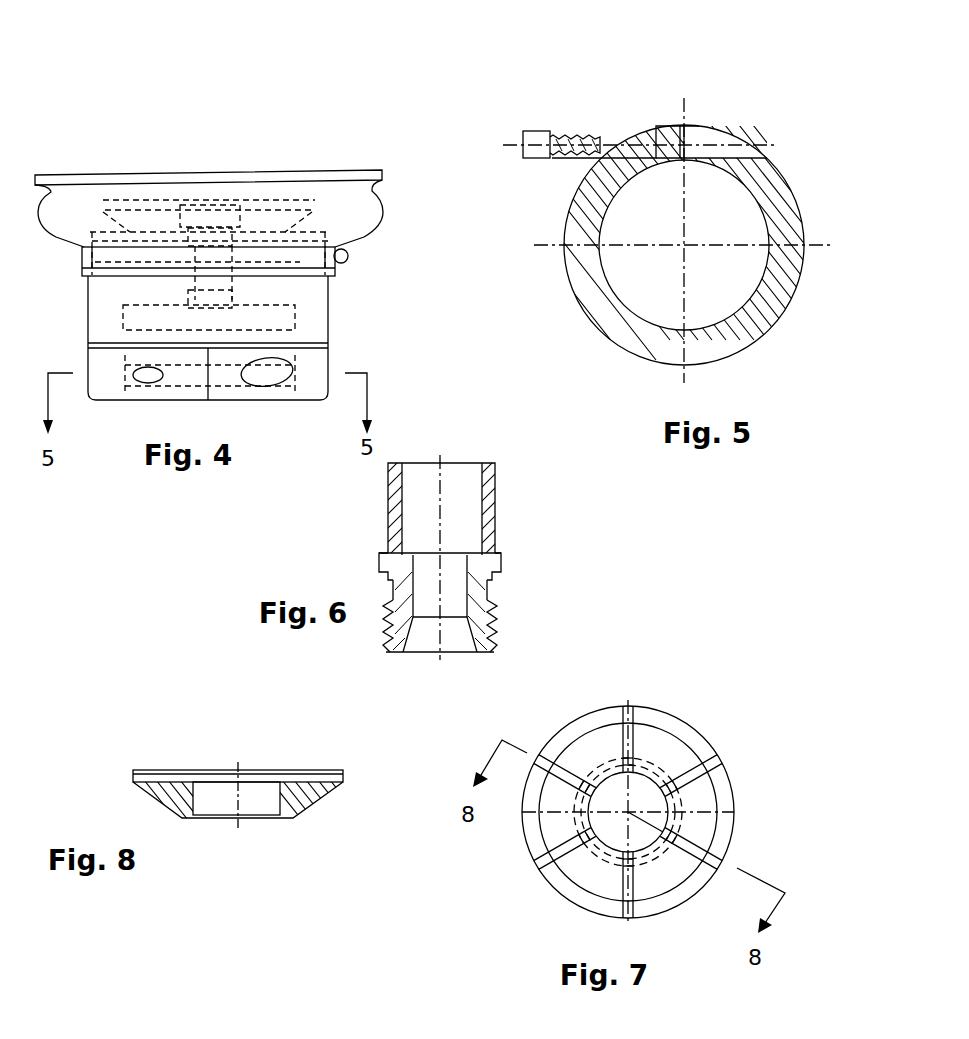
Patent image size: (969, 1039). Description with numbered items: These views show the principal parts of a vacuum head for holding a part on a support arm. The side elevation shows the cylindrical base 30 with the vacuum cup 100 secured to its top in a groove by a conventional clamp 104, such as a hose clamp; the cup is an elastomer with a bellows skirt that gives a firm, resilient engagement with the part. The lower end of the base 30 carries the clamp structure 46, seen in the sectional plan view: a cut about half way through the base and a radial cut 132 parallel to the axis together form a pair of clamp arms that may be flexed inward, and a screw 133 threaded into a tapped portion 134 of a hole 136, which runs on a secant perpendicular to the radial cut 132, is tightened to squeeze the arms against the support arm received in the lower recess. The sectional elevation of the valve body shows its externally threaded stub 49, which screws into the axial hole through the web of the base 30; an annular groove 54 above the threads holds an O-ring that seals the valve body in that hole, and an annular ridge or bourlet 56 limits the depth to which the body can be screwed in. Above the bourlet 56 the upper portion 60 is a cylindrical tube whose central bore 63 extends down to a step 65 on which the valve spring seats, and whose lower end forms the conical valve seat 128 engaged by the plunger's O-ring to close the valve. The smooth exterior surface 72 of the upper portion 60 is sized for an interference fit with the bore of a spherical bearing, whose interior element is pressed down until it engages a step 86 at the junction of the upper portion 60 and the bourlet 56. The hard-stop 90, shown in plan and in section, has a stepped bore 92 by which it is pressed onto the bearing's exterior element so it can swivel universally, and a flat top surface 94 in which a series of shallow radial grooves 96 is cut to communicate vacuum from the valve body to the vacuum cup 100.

In FIG. 4, the vacuum cup 100 is at (380, 199).
In FIG. 4, the clamp 104 is at (348, 258).
In FIG. 5, the cylindrical base 30 is at (796, 308).
In FIG. 5, the clamp structure 46 is at (657, 80).
In FIG. 5, the radial cut 132 is at (684, 144).
In FIG. 5, the screw 133 is at (561, 133).
In FIG. 5, the tapped portion 134 is at (721, 147).
In FIG. 5, the hole 136 is at (646, 137).
In FIG. 6, the upper portion of the valve body 60 is at (452, 563).
In FIG. 6, the central bore 63 is at (404, 490).
In FIG. 6, the step 65 is at (478, 553).
In FIG. 6, the exterior surface 72 is at (498, 485).
In FIG. 6, the step 86 is at (378, 560).
In FIG. 6, the annular ridge or bourlet 56 is at (500, 560).
In FIG. 6, the annular groove 54 is at (489, 590).
In FIG. 6, the externally threaded stub 49 is at (498, 626).
In FIG. 6, the conical valve seat 128 is at (465, 635).
In FIG. 7, the hard-stop 90 is at (641, 788).
In FIG. 8, the hard-stop 90 is at (203, 802).
In FIG. 8, the flat top surface 94 is at (296, 770).
In FIG. 7, the shallow radial grooves 96 is at (628, 705).
In FIG. 8, the shallow radial grooves 96 is at (133, 771).
In FIG. 8, the stepped bore 92 is at (223, 828).